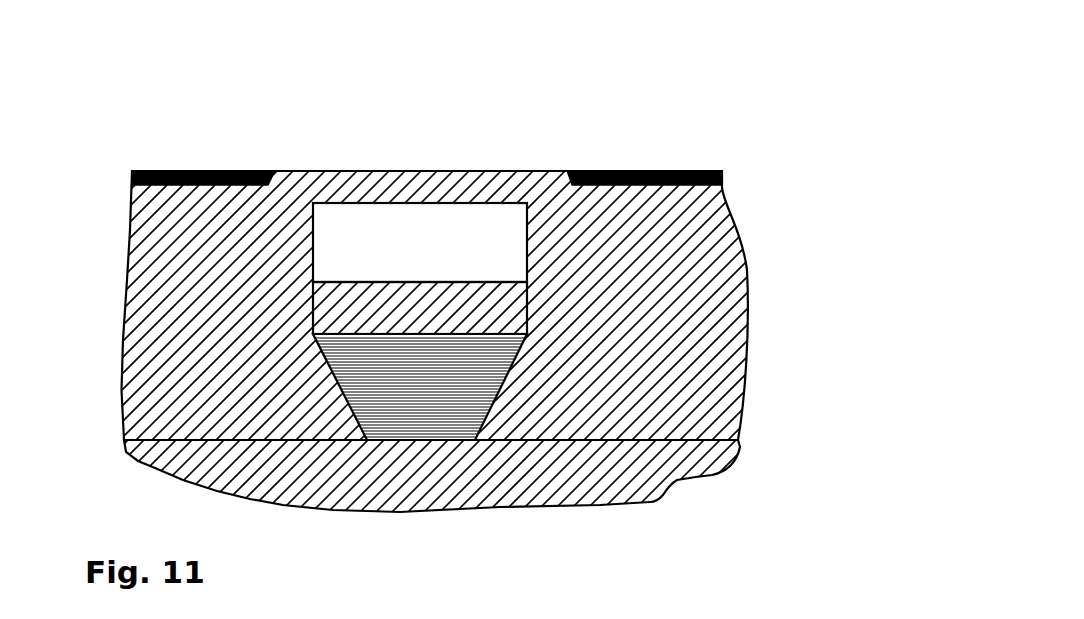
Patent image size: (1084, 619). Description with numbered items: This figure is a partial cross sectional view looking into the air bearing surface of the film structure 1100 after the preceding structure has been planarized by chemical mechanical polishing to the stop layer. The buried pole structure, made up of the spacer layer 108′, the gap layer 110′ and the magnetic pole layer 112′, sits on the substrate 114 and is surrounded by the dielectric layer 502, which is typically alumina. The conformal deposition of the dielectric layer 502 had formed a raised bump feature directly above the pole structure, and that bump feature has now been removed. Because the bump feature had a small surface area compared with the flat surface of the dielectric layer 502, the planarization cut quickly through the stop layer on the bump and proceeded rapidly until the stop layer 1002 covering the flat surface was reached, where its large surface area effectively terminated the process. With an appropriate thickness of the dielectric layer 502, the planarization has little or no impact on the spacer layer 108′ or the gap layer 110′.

The film structure 1100 is at (542, 287).
The stop layer 1002 is at (197, 169).
The spacer layer 108′ is at (447, 244).
The gap layer 110′ is at (445, 314).
The pole layer 112′ is at (455, 395).
The dielectric layer 502 is at (652, 310).
The substrate 114 is at (458, 479).